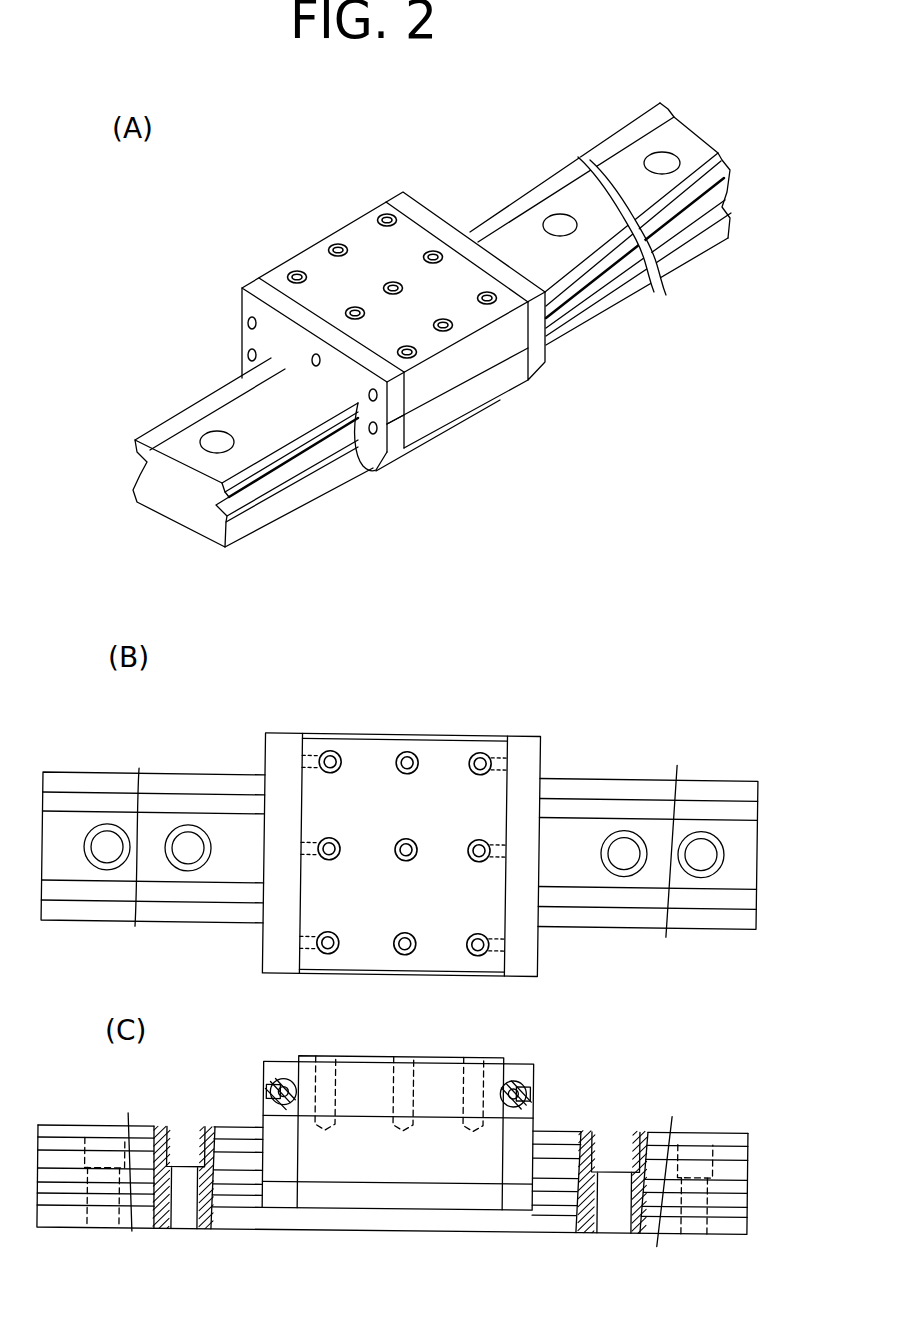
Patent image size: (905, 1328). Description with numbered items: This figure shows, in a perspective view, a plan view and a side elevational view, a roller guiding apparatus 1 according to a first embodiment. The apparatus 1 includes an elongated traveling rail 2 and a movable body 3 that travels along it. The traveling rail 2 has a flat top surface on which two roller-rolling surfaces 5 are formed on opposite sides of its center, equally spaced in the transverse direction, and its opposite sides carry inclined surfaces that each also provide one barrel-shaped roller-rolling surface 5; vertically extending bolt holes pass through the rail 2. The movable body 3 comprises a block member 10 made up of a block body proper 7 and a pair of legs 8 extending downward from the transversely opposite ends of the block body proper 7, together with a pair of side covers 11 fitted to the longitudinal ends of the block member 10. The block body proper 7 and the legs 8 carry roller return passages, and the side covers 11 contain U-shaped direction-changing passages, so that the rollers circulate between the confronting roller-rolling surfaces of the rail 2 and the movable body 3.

The roller guiding apparatus 1 is at (501, 192).
The traveling rail 2 is at (602, 307).
The movable body 3 is at (350, 214).
The roller-rolling surfaces 5 is at (186, 428).
The block body proper 7 is at (455, 312).
The legs 8 is at (449, 402).
The block member 10 is at (313, 258).
The side covers 11 is at (262, 286).